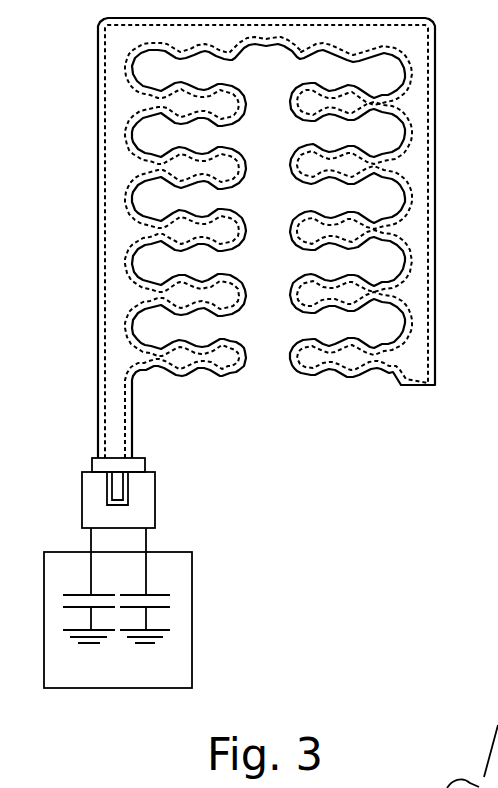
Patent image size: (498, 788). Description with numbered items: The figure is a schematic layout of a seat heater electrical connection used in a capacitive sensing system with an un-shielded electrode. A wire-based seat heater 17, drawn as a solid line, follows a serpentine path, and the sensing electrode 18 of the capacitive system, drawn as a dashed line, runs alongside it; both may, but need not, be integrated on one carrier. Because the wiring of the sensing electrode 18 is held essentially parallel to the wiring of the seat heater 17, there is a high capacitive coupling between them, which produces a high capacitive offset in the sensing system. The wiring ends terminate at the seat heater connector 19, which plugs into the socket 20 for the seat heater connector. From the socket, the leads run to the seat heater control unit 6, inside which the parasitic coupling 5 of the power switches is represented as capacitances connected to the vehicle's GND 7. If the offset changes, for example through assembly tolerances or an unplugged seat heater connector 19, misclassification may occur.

The seat heater 17 is at (262, 438).
The sensing electrode 18 is at (262, 480).
The seat heater connector 19 is at (138, 452).
The socket for the seat heater connector 20 is at (139, 502).
The parasitic coupling of the power switches 5 is at (118, 579).
The seat heater control unit 6 is at (118, 621).
The vehicle's GND 7 is at (116, 649).